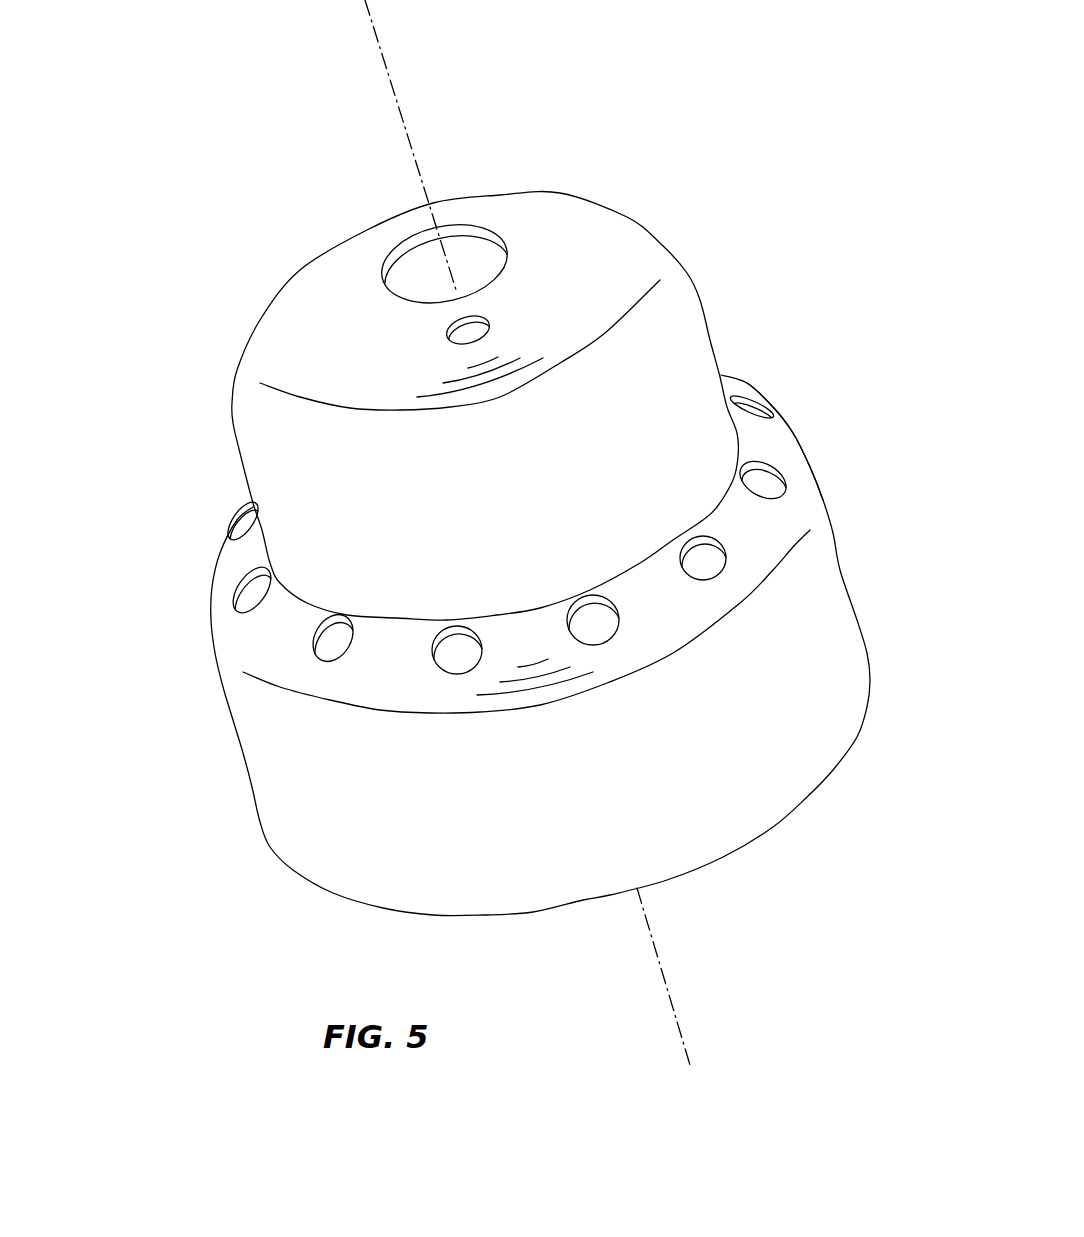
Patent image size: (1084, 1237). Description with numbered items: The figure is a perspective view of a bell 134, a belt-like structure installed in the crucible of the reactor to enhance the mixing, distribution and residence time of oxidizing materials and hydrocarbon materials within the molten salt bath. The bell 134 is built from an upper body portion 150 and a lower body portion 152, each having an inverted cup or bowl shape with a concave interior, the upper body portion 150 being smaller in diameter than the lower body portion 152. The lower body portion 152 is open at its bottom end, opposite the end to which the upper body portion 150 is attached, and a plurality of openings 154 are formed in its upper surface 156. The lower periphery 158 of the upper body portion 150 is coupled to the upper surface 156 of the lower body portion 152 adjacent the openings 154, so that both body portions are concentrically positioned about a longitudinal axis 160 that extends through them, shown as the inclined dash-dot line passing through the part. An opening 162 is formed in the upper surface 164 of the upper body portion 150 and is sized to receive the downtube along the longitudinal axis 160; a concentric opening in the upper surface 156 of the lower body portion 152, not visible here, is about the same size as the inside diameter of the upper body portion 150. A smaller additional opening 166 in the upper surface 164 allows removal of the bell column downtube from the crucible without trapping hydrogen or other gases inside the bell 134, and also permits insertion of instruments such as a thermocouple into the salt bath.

The bell 134 is at (758, 280).
The upper body portion 150 is at (216, 447).
The lower body portion 152 is at (208, 718).
The openings 154 is at (783, 468).
The upper surface of the lower body portion 156 is at (748, 447).
The lower periphery of the upper body portion 158 is at (296, 608).
The longitudinal axis 160 is at (395, 100).
The opening 162 is at (473, 225).
The upper surface of the upper body portion 164 is at (563, 261).
The additional opening 166 is at (447, 335).